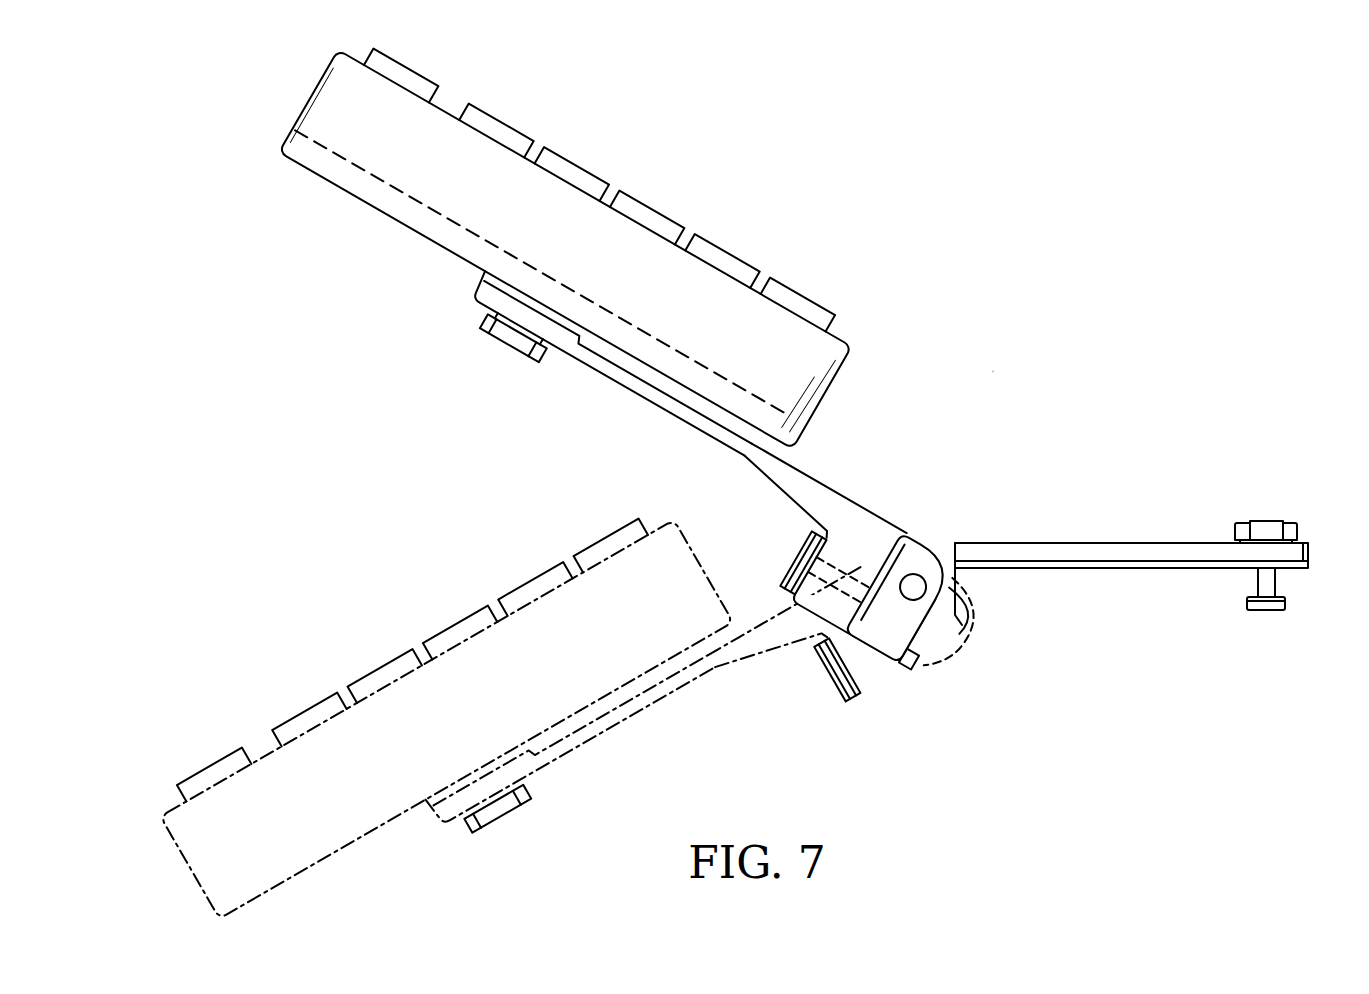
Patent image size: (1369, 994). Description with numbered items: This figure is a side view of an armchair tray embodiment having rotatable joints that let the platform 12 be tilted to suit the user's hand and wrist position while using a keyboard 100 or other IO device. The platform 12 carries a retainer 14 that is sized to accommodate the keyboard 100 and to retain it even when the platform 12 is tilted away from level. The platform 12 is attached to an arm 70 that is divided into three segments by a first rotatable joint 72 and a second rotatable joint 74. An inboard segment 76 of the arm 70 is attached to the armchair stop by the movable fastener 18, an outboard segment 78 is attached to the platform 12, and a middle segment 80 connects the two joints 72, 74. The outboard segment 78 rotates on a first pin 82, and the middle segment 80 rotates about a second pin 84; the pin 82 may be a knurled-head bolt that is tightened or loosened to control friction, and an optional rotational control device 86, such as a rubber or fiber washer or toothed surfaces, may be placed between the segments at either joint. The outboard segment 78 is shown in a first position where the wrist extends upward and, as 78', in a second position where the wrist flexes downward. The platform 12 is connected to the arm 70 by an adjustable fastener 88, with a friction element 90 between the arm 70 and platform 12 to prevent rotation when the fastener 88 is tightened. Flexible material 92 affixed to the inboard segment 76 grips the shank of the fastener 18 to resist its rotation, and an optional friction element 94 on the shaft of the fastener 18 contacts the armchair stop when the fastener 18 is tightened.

The platform 12 is at (375, 177).
The retainer 14 is at (325, 103).
The movable fastener 18 is at (1262, 522).
The arm 70 is at (990, 369).
The first rotatable joint 72 is at (901, 574).
The second rotatable joint 74 is at (965, 587).
The inboard segment 76 is at (1131, 561).
The outboard segment 78 is at (818, 508).
The outboard segment in second position 78' is at (776, 666).
The middle segment 80 is at (900, 652).
The first pin 82 is at (832, 568).
The second pin 84 is at (912, 601).
The rotational control device 86 is at (902, 534).
The adjustable fastener 88 is at (508, 348).
The friction element 90 is at (483, 284).
The flexible material 92 is at (1140, 565).
The friction element 94 is at (1247, 600).
The keyboard 100 is at (732, 252).